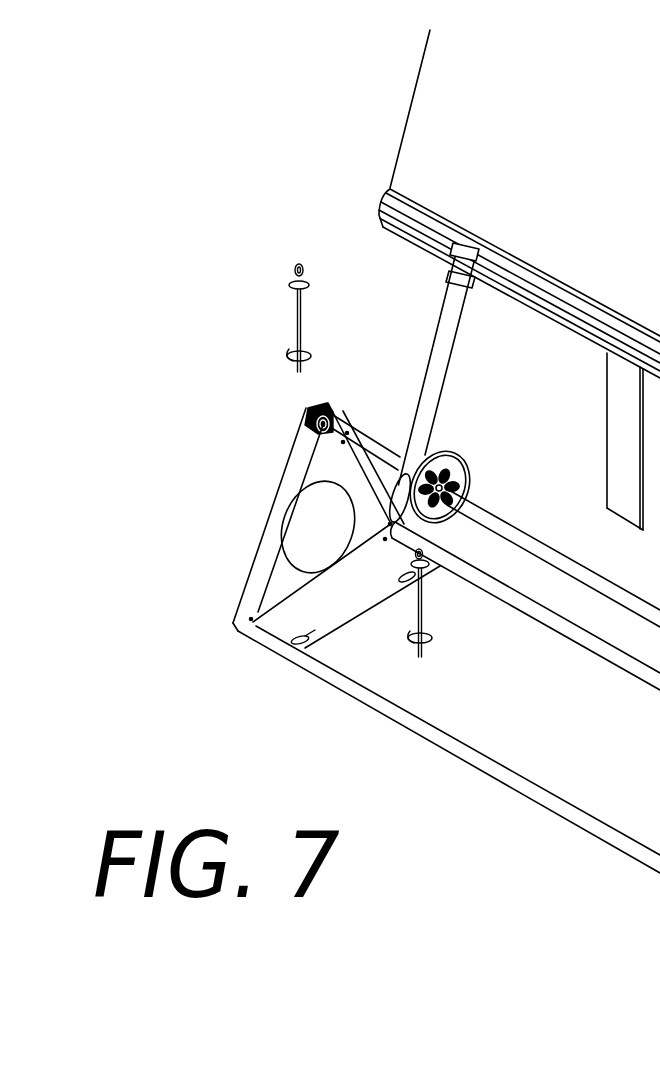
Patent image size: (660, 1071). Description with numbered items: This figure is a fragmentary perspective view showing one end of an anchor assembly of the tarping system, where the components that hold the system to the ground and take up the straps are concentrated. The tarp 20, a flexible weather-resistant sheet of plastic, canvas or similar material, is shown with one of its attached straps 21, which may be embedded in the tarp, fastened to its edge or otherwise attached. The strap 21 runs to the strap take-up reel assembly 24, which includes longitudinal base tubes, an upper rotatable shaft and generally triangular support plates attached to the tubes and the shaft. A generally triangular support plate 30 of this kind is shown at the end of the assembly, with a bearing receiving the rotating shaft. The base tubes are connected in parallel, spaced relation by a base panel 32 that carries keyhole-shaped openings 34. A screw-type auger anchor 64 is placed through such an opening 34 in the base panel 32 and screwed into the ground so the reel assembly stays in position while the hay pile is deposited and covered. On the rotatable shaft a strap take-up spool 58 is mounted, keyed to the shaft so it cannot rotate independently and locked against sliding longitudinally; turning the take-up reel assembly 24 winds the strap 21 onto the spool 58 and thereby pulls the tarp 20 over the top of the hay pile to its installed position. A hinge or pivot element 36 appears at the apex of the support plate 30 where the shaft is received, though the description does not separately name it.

The tarp 20 is at (612, 169).
The straps 21 is at (446, 372).
The strap take-up reel assembly 24 is at (302, 427).
The support plates 30 is at (258, 546).
The base panels 32 is at (328, 634).
The keyhole-shaped openings 34 is at (412, 572).
The hinge 36 is at (327, 400).
The strap take-up spools 58 is at (460, 458).
The screw-type auger anchors 64 is at (422, 647).